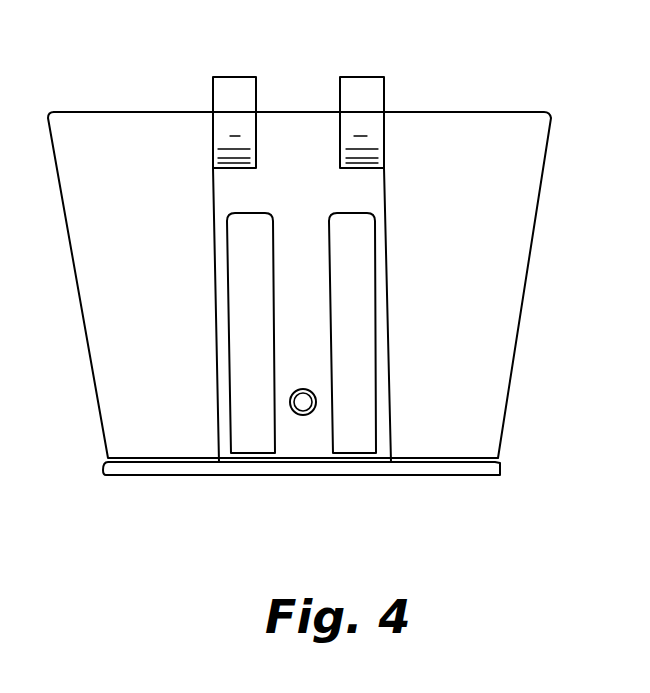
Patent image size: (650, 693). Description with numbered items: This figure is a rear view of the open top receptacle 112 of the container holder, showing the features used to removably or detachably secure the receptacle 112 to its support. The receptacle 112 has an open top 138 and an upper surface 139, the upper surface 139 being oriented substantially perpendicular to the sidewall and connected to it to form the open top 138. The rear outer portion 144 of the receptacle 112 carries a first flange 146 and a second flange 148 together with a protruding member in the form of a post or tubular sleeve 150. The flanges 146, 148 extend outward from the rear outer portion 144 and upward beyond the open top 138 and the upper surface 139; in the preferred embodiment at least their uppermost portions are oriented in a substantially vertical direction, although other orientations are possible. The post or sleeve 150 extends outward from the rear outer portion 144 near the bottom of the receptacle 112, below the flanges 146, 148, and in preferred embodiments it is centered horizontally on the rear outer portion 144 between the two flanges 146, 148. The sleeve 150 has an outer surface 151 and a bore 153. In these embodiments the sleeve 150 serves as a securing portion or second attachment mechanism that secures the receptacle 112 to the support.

The open top receptacle 112 is at (490, 92).
The open top 138 is at (173, 102).
The upper surface 139 is at (93, 112).
The rear outer portion 144 is at (477, 412).
The first flange 146 is at (352, 75).
The second flange 148 is at (226, 75).
The post or tubular sleeve 150 is at (309, 420).
The outer surface 151 is at (297, 390).
The bore 153 is at (315, 397).